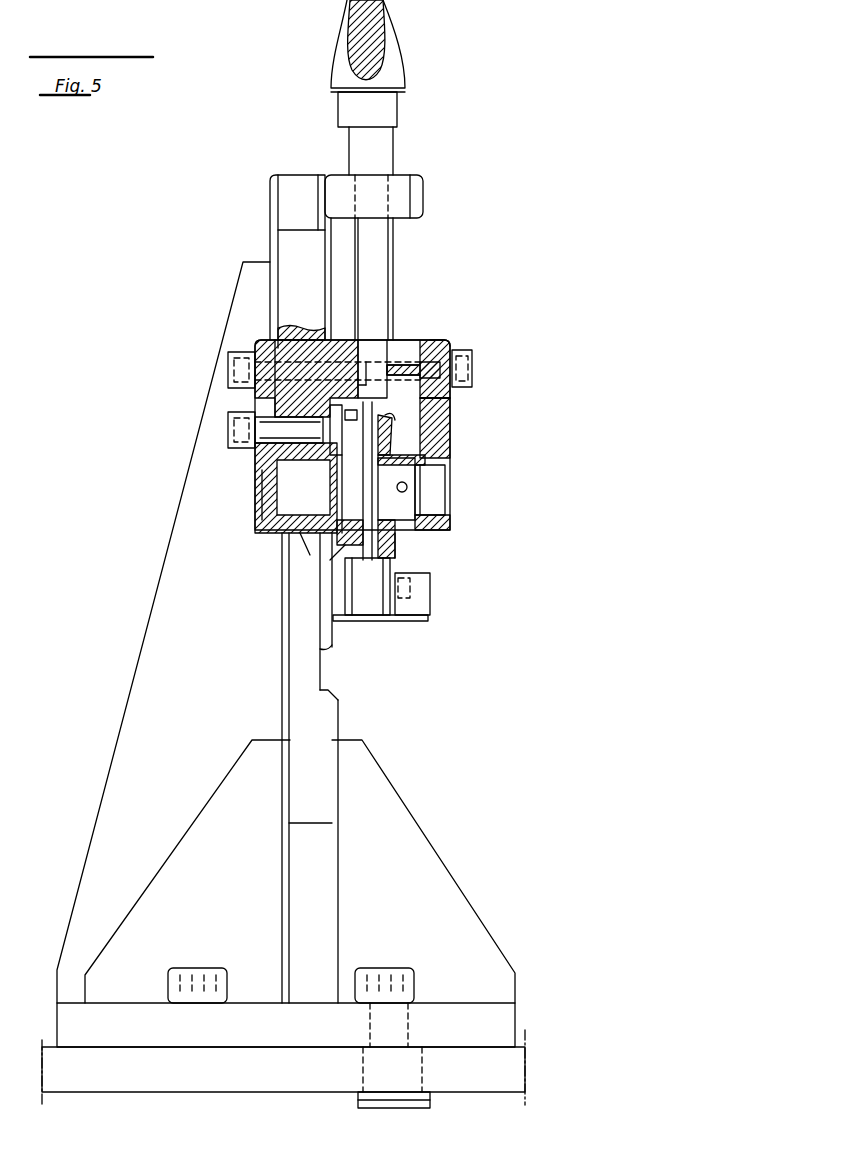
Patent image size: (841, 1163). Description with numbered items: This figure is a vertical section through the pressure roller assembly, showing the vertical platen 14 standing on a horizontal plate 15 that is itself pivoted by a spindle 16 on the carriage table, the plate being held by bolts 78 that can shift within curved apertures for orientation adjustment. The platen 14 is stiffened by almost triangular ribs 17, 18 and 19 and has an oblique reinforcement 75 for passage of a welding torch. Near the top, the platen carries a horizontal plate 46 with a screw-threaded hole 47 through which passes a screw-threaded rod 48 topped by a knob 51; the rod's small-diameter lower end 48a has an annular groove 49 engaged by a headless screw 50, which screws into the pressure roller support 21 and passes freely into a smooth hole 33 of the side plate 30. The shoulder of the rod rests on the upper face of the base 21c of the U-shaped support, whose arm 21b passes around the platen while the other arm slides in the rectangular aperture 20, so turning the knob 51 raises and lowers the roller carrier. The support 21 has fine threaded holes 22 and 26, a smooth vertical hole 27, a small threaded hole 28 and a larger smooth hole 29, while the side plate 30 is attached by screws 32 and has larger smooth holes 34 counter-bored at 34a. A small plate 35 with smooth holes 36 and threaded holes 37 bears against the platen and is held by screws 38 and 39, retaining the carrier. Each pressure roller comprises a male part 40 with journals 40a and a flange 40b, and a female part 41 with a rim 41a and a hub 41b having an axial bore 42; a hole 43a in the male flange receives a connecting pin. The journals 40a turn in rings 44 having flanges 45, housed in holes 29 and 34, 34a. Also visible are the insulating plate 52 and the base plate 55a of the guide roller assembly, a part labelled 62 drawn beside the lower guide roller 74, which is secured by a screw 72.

The vertical platen 14 is at (275, 245).
The horizontal plate 15 is at (56, 1022).
The spindle 16 is at (372, 1108).
The rib 17 is at (416, 830).
The rib 18 is at (190, 834).
The rib 19 is at (122, 712).
The rectangular aperture 20 is at (290, 330).
The pressure roller support 21 is at (362, 335).
The arm of the support 21b is at (304, 554).
The base of the U 21c is at (280, 345).
The screw-threaded hole 22 is at (338, 325).
The screw-threaded hole 26 is at (178, 1086).
The smooth vertical hole 27 is at (430, 370).
The screw-threaded hole 28 is at (278, 470).
The smooth hole 29 is at (264, 550).
The side plate 30 is at (470, 408).
The screw 32 is at (472, 360).
The smooth hole 33 is at (444, 385).
The smooth hole 34 is at (446, 450).
The counter-bore 34a is at (448, 440).
The small plate 35 is at (255, 390).
The smooth hole 36 is at (262, 440).
The screw-threaded hole 37 is at (258, 348).
The screw 38 is at (228, 425).
The screw 39 is at (228, 360).
The male part 40 is at (397, 489).
The journal 40a is at (252, 590).
The flange 40b is at (345, 545).
The female part 41 is at (420, 530).
The rim 41a is at (403, 409).
The hub 41b is at (416, 547).
The axial bore 42 is at (397, 435).
The hole 43a is at (410, 487).
The ring 44 is at (440, 460).
The flange 45 is at (440, 520).
The horizontal plate 46 is at (426, 199).
The screw-threaded hole 47 is at (400, 190).
The screw-threaded rod 48 is at (393, 240).
The lower end of rod 48a is at (410, 340).
The annular groove 49 is at (398, 340).
The headless screw 50 is at (446, 340).
The knob 51 is at (345, 35).
The insulating plate 52 is at (328, 650).
The base plate 55a is at (276, 502).
The clamp piece 62 is at (431, 594).
The screw 72 is at (418, 621).
The guide roller 74 is at (375, 616).
The oblique reinforcement 75 is at (333, 690).
The bolt 78 is at (215, 968).